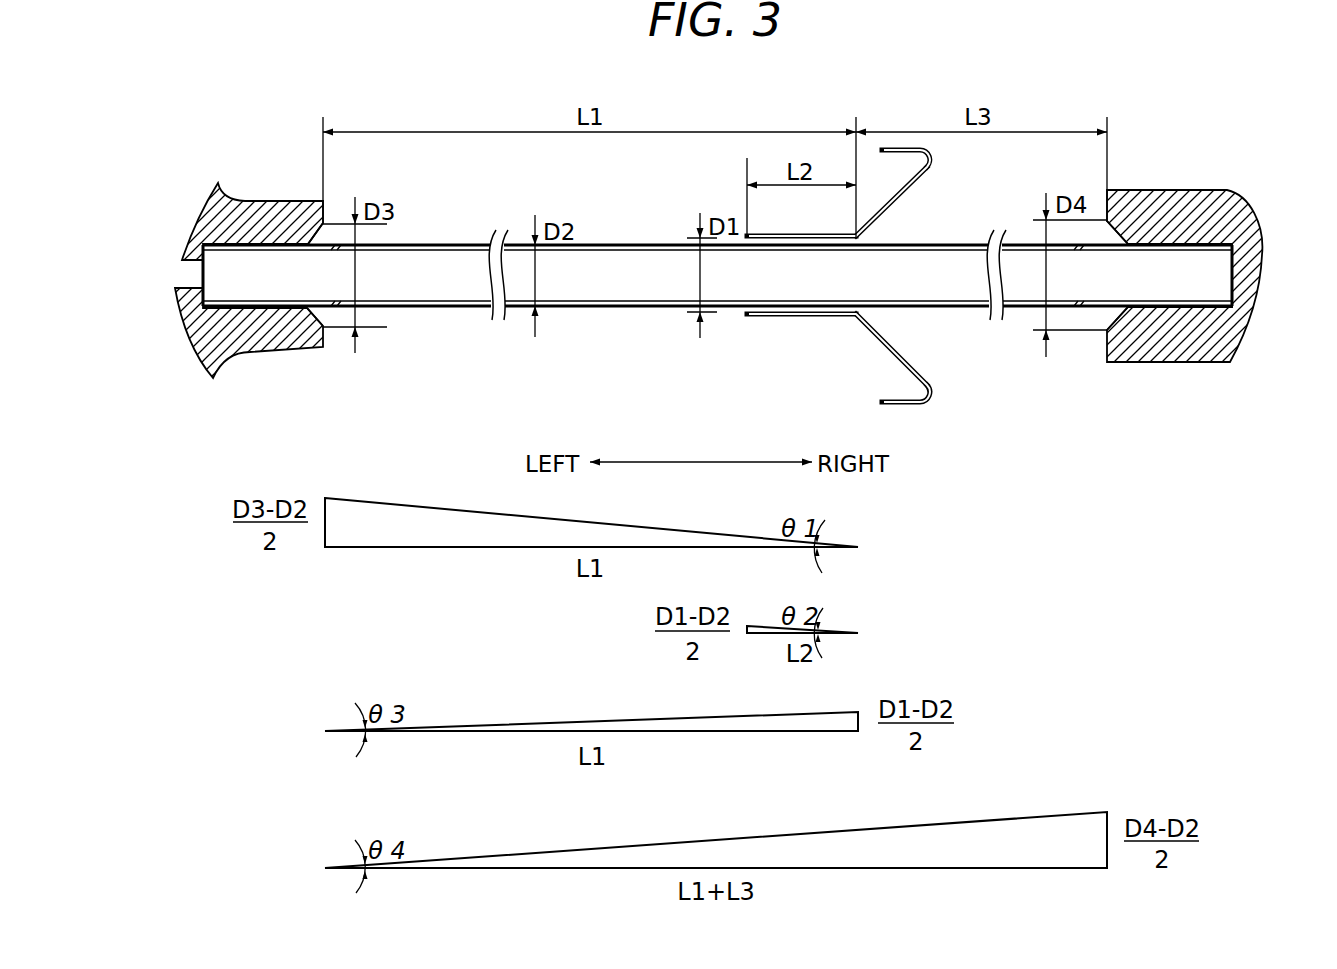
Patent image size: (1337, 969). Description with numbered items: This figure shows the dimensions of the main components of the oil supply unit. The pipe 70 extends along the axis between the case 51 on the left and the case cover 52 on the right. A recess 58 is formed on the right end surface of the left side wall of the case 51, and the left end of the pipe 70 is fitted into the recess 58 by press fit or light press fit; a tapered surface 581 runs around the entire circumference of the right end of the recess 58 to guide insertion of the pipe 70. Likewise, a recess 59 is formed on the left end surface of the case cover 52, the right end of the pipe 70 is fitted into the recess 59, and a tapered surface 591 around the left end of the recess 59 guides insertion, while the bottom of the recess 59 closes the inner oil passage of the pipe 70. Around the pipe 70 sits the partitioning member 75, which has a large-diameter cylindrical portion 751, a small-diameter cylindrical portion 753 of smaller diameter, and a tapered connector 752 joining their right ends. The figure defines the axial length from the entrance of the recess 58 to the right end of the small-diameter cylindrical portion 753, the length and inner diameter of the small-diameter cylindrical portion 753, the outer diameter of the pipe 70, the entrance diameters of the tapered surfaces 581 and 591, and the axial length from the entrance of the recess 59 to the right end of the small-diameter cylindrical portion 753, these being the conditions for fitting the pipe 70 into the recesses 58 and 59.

The case 51 is at (267, 212).
The case cover 52 is at (1153, 200).
The recess 58 is at (270, 248).
The tapered surface 581 is at (322, 316).
The recess 59 is at (1207, 247).
The tapered surface 591 is at (1112, 313).
The pipe 70 is at (652, 307).
The partitioning member 75 is at (864, 302).
The large-diameter cylindrical portion 751 is at (908, 404).
The connector 752 is at (880, 343).
The small-diameter cylindrical portion 753 is at (773, 317).